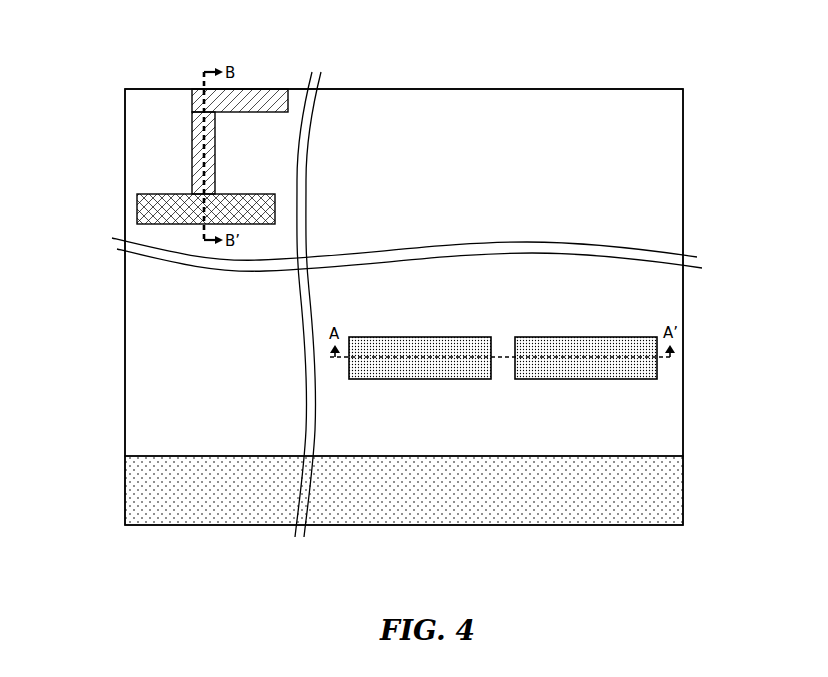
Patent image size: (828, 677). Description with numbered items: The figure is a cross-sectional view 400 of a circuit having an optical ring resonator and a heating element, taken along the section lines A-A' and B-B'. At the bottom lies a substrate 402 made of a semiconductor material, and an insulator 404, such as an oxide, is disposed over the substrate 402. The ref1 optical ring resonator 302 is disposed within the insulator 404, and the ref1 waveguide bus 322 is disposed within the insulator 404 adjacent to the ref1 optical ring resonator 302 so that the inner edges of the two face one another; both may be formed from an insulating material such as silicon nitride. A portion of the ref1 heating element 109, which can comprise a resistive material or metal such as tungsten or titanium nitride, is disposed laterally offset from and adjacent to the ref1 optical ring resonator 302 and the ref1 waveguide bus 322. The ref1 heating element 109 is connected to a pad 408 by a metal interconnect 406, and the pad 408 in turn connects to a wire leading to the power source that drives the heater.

The cross-sectional view 400 is at (100, 38).
The substrate 402 is at (677, 497).
The insulator 404 is at (677, 435).
The metal interconnect 406 is at (193, 137).
The pad 408 is at (260, 95).
The ref1 heating element 109 is at (140, 210).
The ref1 optical ring resonator 302 is at (363, 339).
The ref1 waveguide bus 322 is at (610, 380).